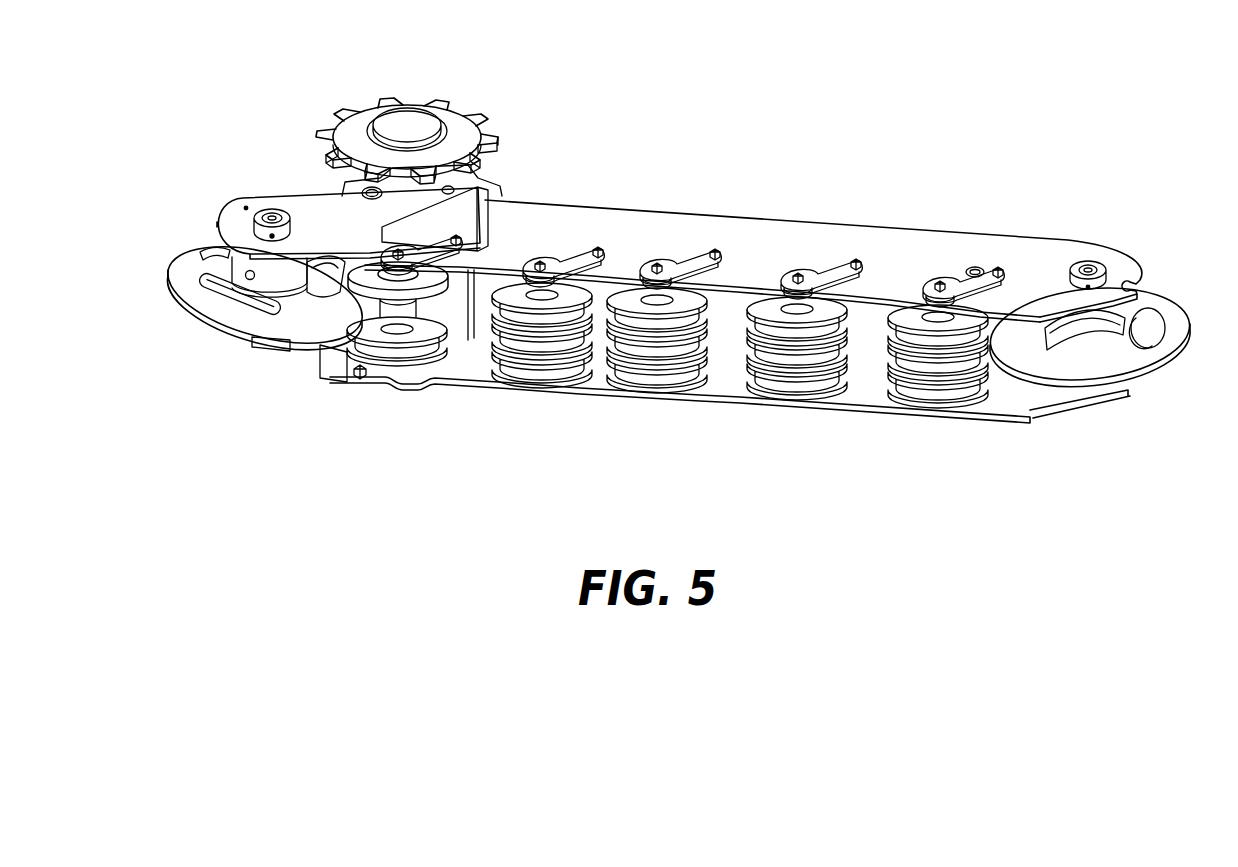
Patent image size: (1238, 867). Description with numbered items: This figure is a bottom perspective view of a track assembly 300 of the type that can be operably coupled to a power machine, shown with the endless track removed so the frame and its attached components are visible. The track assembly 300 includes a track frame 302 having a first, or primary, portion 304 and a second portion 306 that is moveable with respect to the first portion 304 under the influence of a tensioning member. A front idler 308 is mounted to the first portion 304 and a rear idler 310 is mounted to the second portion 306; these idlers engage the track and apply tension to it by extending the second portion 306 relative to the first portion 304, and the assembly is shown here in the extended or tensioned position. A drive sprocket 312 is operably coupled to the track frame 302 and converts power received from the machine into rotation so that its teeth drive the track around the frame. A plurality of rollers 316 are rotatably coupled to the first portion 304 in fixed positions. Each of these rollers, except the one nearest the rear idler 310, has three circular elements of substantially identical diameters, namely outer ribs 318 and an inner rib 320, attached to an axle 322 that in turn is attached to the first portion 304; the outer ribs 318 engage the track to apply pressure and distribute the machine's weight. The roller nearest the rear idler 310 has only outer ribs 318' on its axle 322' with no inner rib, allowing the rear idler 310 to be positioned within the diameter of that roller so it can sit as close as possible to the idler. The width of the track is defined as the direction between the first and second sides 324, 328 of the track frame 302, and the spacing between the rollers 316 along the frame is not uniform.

The track assembly 300 is at (665, 80).
The track frame 302 is at (975, 235).
The first portion 304 is at (1040, 262).
The second portion 306 is at (305, 218).
The front idler 308 is at (1112, 378).
The rear idler 310 is at (210, 323).
The drive sprocket 312 is at (372, 113).
The rollers 316 is at (582, 292).
The outer ribs 318 is at (547, 422).
The outer ribs 318' is at (404, 401).
The inner rib 320 is at (600, 367).
The axle 322 is at (570, 392).
The axle 322' is at (432, 361).
The first side 324 is at (767, 397).
The second side 328 is at (727, 232).